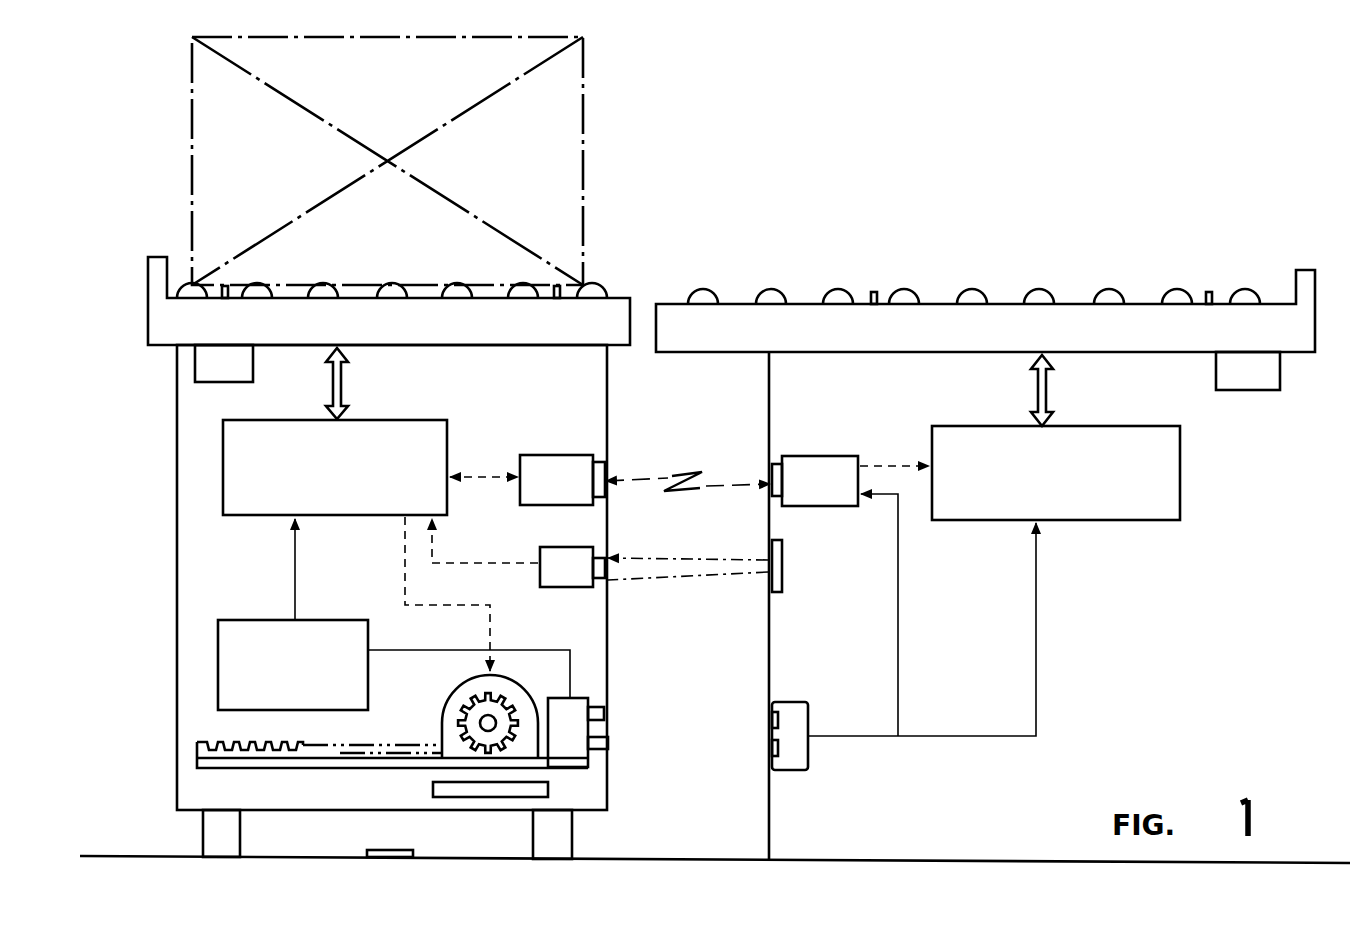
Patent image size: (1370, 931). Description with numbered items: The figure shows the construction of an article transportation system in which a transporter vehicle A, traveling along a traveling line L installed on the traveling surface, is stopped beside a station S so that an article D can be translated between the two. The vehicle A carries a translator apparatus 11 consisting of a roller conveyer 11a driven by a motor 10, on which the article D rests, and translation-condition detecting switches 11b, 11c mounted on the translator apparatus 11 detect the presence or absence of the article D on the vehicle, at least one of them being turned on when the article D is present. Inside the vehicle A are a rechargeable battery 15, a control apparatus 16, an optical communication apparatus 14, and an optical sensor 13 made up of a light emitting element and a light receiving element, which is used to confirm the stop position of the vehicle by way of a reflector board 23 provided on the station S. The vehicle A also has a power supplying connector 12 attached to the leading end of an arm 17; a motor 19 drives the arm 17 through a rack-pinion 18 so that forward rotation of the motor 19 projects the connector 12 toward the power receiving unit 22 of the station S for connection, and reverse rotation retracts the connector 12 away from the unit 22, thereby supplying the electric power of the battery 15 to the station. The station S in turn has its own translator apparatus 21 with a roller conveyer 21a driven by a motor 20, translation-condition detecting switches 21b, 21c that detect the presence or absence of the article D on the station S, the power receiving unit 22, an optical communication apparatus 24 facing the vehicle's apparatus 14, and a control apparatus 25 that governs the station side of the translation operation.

The motor 10 is at (195, 365).
The translator apparatus 11 is at (183, 276).
The roller conveyer 11a is at (457, 284).
The translation-condition detecting switch 11b is at (225, 288).
The translation-condition detecting switch 11c is at (556, 288).
The power supplying connector 12 is at (590, 699).
The optical sensor 13 is at (575, 588).
The optical communication apparatus 14 is at (570, 455).
The rechargeable battery 15 is at (243, 620).
The control apparatus 16 is at (388, 437).
The arm 17 is at (333, 770).
The rack-pinion 18 is at (456, 737).
The motor 19 is at (452, 690).
The motor 20 is at (1270, 378).
The translator apparatus 21 is at (1138, 250).
The roller conveyer 21a is at (1040, 289).
The translation-condition detecting switch 21b is at (1210, 292).
The translation-condition detecting switch 21c is at (874, 292).
The power receiving unit 22 is at (792, 702).
The reflector board 23 is at (770, 582).
The optical communication apparatus 24 is at (800, 458).
The control apparatus 25 is at (1090, 428).
The transporter vehicle A is at (177, 520).
The article D is at (583, 133).
The traveling line L is at (412, 850).
The station S is at (1070, 668).